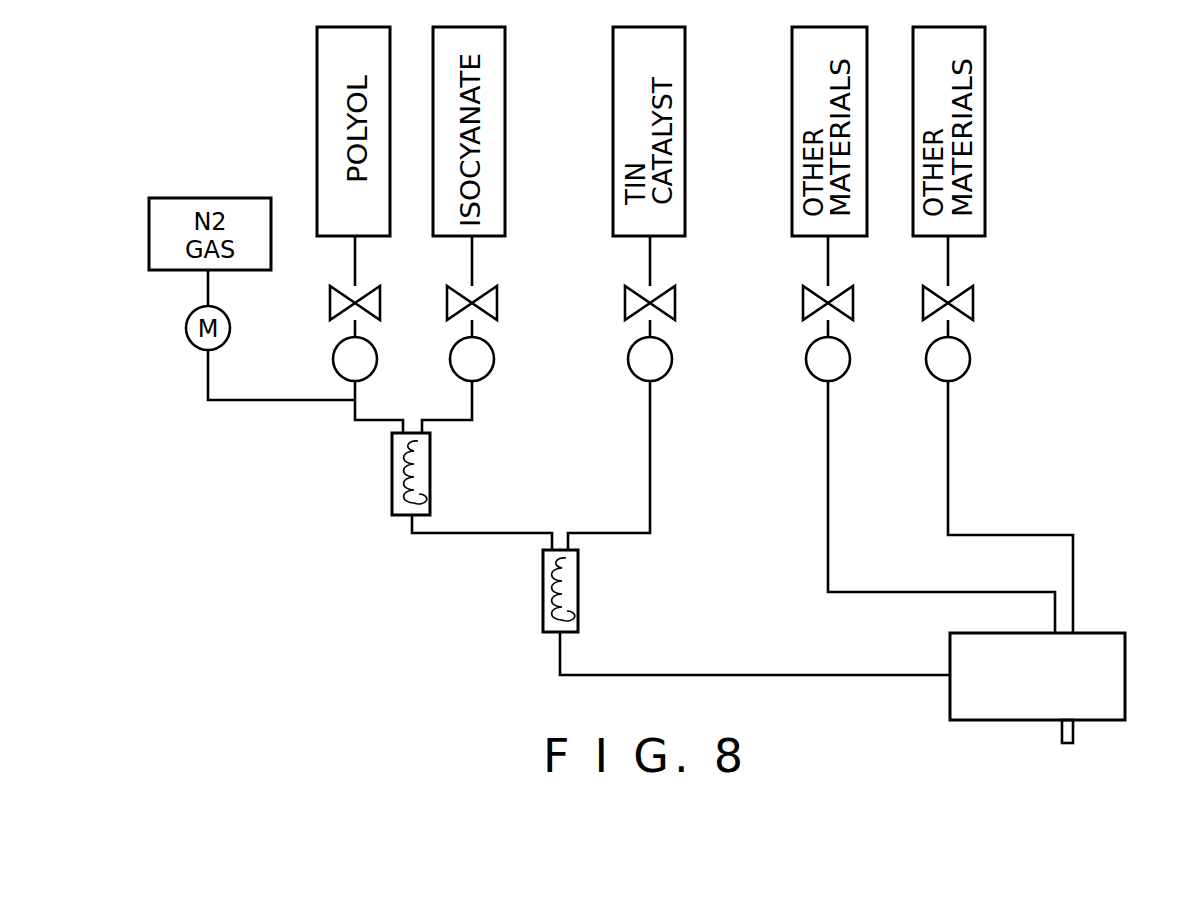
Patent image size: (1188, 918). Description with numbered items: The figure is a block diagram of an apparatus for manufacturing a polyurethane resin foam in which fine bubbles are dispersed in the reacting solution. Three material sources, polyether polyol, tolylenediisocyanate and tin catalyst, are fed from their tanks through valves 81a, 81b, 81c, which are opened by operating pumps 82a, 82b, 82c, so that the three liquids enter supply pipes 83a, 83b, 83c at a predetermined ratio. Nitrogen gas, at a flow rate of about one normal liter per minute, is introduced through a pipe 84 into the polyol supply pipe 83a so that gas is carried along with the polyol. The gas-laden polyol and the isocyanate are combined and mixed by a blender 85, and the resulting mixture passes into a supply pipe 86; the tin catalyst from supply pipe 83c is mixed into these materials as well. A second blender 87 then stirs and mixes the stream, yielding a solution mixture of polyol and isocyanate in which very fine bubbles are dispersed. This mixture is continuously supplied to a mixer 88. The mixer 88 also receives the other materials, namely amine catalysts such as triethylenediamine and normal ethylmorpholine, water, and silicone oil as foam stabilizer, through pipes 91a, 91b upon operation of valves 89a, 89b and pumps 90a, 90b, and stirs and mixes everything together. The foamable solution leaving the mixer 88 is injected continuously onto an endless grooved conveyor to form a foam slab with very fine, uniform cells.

The valve 81a is at (329, 305).
The valve 81b is at (447, 301).
The valve 81c is at (676, 303).
The pump 82a is at (381, 356).
The pump 82b is at (493, 366).
The pump 82c is at (671, 371).
The supply pipe 83a is at (355, 407).
The supply pipe 83b is at (470, 403).
The supply pipe 83c is at (652, 472).
The pipe 84 is at (227, 403).
The blender 85 is at (430, 487).
The supply pipe 86 is at (462, 537).
The blender 87 is at (580, 612).
The mixer 88 is at (1127, 662).
The valve 89a is at (856, 296).
The valve 89b is at (976, 300).
The pump 90a is at (820, 383).
The pump 90b is at (970, 364).
The pipe 91a is at (830, 485).
The pipe 91b is at (950, 458).